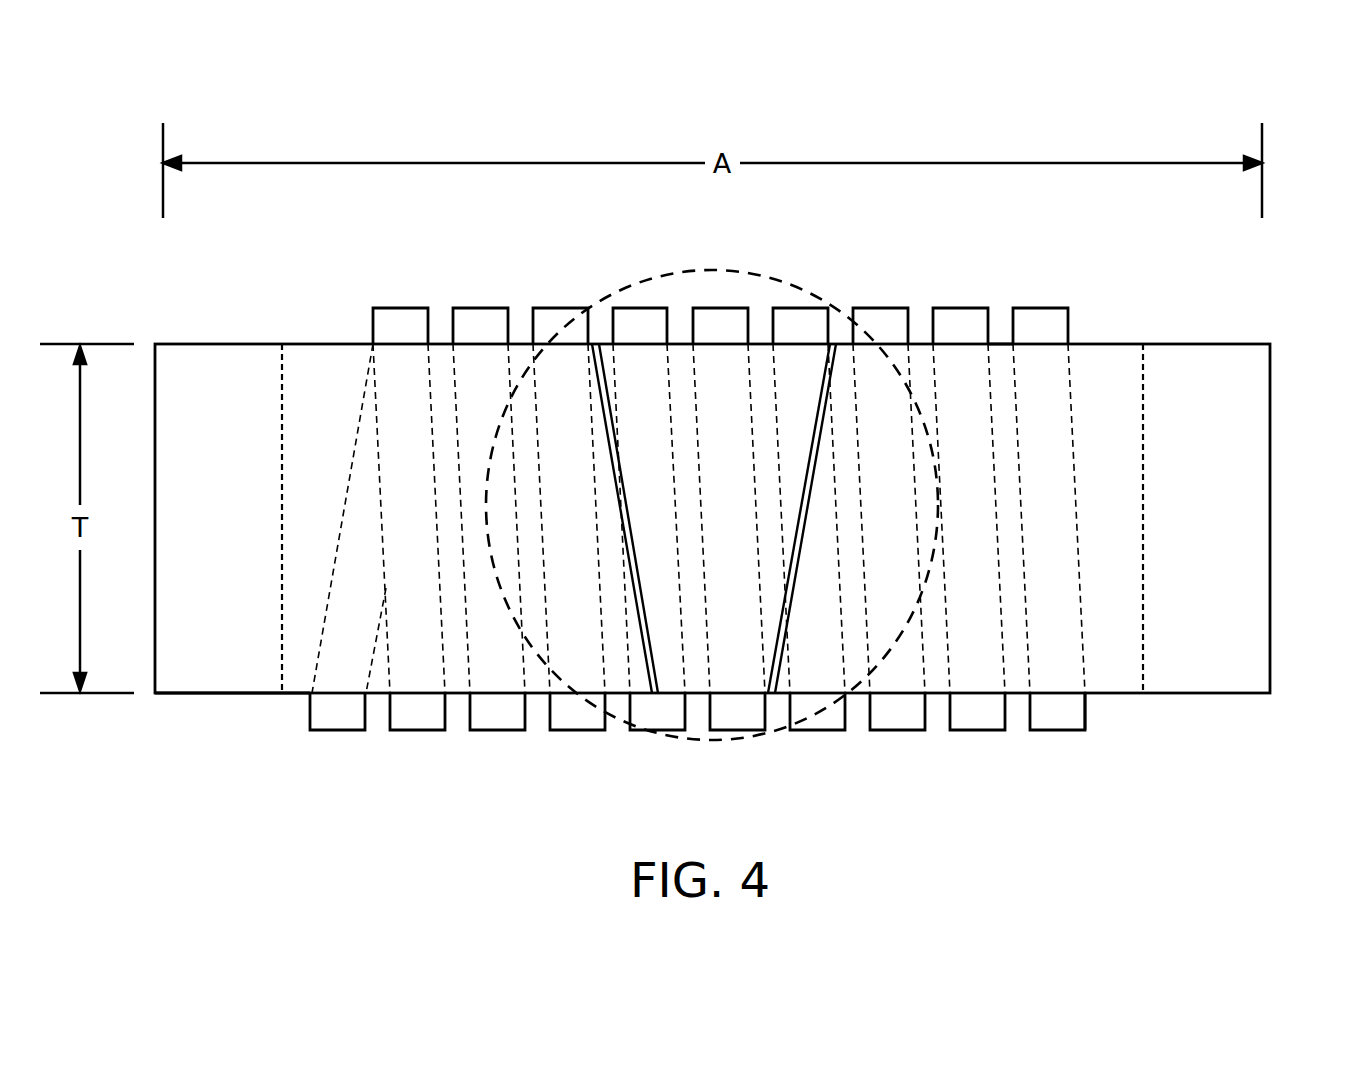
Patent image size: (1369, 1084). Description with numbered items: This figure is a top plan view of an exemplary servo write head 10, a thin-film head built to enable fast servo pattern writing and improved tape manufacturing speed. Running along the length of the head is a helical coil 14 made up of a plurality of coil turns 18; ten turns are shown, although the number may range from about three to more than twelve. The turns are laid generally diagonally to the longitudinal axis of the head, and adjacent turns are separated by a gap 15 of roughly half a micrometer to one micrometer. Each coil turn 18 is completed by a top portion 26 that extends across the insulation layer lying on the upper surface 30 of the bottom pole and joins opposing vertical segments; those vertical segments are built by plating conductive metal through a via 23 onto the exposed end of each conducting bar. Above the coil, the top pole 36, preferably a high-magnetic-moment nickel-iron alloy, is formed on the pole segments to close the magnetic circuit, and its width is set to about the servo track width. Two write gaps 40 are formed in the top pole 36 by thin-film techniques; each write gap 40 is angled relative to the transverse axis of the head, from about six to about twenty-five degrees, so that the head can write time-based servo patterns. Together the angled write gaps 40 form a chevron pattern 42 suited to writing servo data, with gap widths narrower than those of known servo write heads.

The servo write head 10 is at (762, 487).
The coil 14 is at (890, 742).
The gap 15 is at (998, 345).
The coil turns 18 is at (518, 645).
The via 23 is at (1087, 707).
The top portion 26 is at (480, 316).
The upper surface 30 is at (1243, 441).
The top pole 36 is at (222, 693).
The write gap 40 is at (838, 354).
The chevron pattern 42 is at (708, 742).